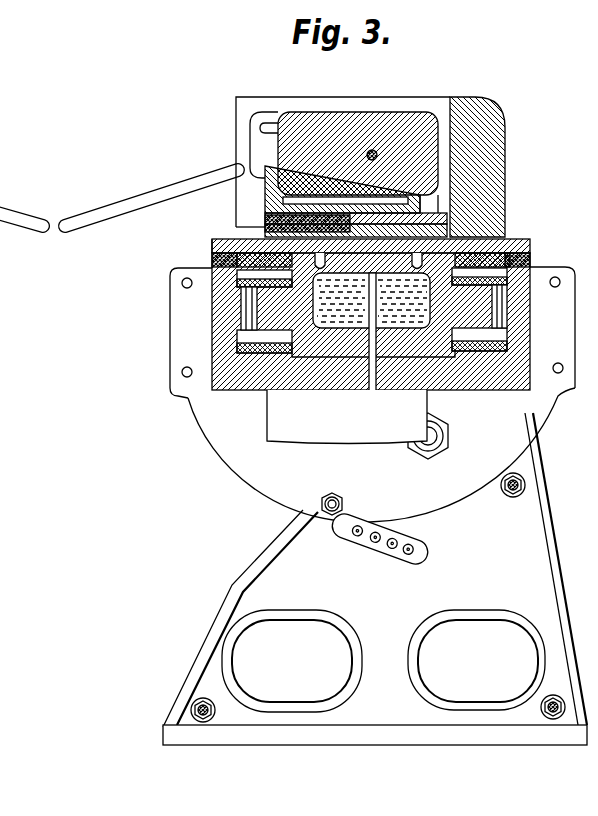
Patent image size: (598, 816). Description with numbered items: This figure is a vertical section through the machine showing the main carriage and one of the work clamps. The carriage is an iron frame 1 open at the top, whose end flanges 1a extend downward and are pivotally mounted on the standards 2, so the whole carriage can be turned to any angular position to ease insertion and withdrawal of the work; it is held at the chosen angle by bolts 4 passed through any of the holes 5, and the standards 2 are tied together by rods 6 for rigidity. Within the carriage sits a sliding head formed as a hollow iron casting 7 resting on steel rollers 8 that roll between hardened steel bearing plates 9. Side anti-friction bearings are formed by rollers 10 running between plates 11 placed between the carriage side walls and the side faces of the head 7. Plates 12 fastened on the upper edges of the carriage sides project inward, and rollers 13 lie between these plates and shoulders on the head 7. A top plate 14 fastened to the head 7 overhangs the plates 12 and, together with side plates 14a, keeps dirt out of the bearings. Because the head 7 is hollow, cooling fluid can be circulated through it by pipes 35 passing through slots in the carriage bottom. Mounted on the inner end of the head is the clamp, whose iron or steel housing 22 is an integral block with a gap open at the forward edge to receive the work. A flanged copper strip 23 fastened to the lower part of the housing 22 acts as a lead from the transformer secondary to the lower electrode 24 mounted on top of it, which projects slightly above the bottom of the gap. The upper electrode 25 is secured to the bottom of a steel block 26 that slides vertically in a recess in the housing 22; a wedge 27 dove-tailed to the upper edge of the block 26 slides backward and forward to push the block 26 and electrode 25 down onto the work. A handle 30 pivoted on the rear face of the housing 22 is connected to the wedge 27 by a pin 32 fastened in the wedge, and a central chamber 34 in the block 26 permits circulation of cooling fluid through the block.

The iron frame 1 is at (212, 380).
The end flanges 1a is at (381, 455).
The standards 2 is at (375, 579).
The bolts 4 is at (342, 503).
The holes 5 is at (374, 545).
The rods 6 is at (190, 705).
The hollow iron castings 7 is at (300, 293).
The steel rollers 8 is at (340, 305).
The hardened steel bearing plates 9 is at (238, 344).
The rollers 10 is at (250, 310).
The plates 11 is at (245, 340).
The plates 12 is at (238, 262).
The rollers 13 is at (222, 283).
The top plate 14 is at (515, 246).
The side plates 14a is at (214, 247).
The housing 22 is at (487, 118).
The flanged copper strip 23 is at (357, 424).
The lower electrode 24 is at (440, 230).
The upper electrode 25 is at (440, 218).
The steel block 26 is at (275, 190).
The wedge 27 is at (278, 140).
The handle 30 is at (106, 208).
The pin 32 is at (373, 150).
The central chamber 34 is at (290, 213).
The pipes 35 is at (372, 433).